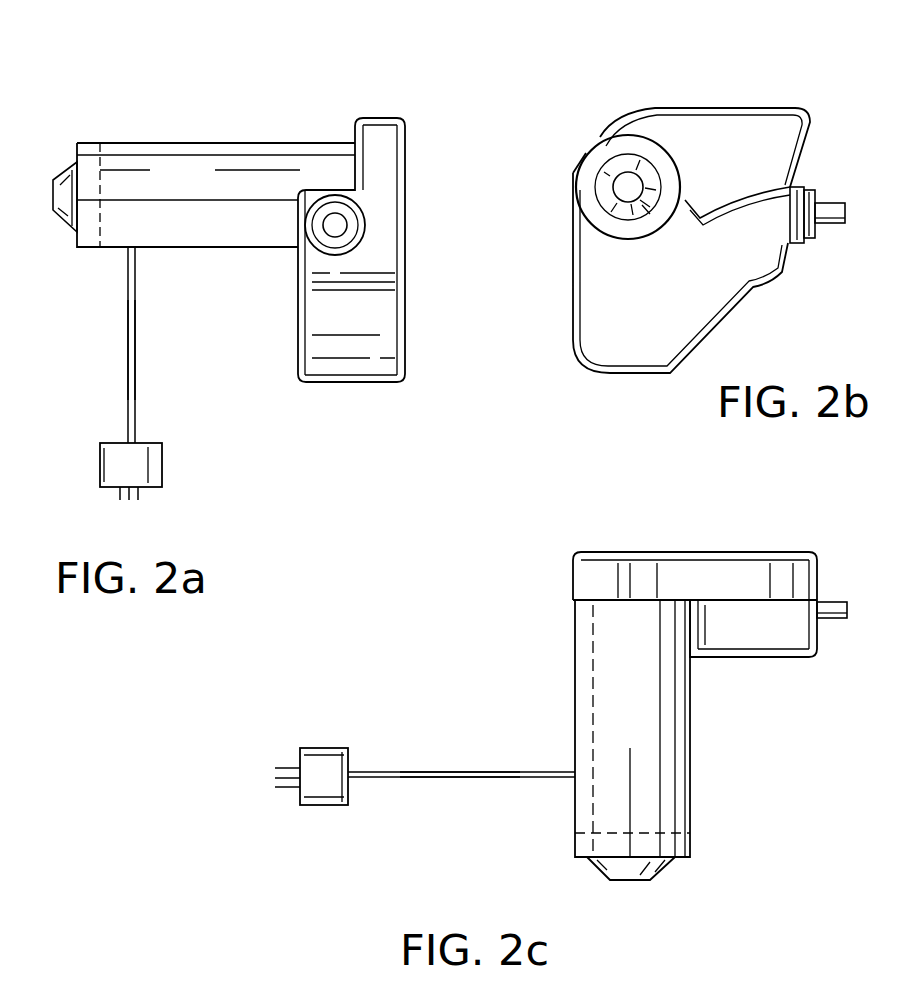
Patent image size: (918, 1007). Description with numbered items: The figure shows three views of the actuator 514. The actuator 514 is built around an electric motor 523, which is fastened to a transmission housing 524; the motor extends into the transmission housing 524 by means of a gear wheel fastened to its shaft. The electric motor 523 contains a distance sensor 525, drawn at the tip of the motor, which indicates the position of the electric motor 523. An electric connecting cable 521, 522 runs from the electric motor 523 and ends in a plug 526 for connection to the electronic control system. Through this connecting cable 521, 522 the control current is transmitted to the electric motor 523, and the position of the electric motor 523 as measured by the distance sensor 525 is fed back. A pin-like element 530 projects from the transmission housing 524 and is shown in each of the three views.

In FIG. 2a, the actuator 514 is at (268, 112).
In FIG. 2b, the actuator 514 is at (714, 92).
In FIG. 2c, the actuator 514 is at (545, 655).
In FIG. 2a, the electric connecting cable 521 is at (137, 375).
In FIG. 2c, the electric connecting cable 521 is at (450, 775).
In FIG. 2a, the electric connecting cable 522 is at (131, 350).
In FIG. 2c, the electric connecting cable 522 is at (460, 774).
In FIG. 2a, the electric motor 523 is at (150, 150).
In FIG. 2b, the electric motor 523 is at (600, 160).
In FIG. 2c, the electric motor 523 is at (682, 720).
In FIG. 2a, the transmission housing 524 is at (358, 380).
In FIG. 2b, the transmission housing 524 is at (768, 118).
In FIG. 2c, the transmission housing 524 is at (758, 560).
In FIG. 2a, the distance sensor 525 is at (95, 245).
In FIG. 2c, the distance sensor 525 is at (692, 845).
In FIG. 2a, the plug 526 is at (155, 472).
In FIG. 2c, the plug 526 is at (320, 755).
In FIG. 2a, the pivot / mounting pin 530 is at (340, 222).
In FIG. 2b, the pivot / mounting pin 530 is at (830, 225).
In FIG. 2c, the pivot / mounting pin 530 is at (838, 628).